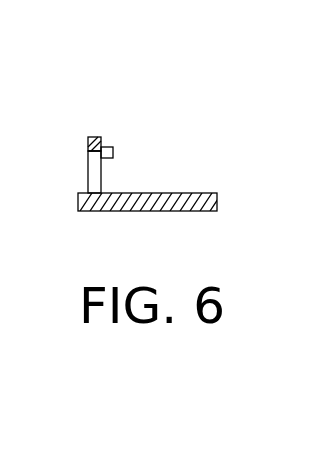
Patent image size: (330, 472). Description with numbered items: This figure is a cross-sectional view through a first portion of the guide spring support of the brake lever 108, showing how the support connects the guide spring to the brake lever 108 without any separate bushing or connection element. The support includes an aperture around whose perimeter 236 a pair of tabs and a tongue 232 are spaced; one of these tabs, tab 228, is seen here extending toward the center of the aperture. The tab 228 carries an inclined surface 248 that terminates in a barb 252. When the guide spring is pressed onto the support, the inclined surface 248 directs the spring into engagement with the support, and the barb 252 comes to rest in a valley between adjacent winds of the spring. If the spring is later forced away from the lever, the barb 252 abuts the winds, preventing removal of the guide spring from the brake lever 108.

The brake lever 108 is at (214, 146).
The tab 228 is at (108, 146).
The tongue 232 is at (84, 206).
The perimeter 236 is at (102, 175).
The inclined surface 248 is at (95, 152).
The barb 252 is at (112, 155).